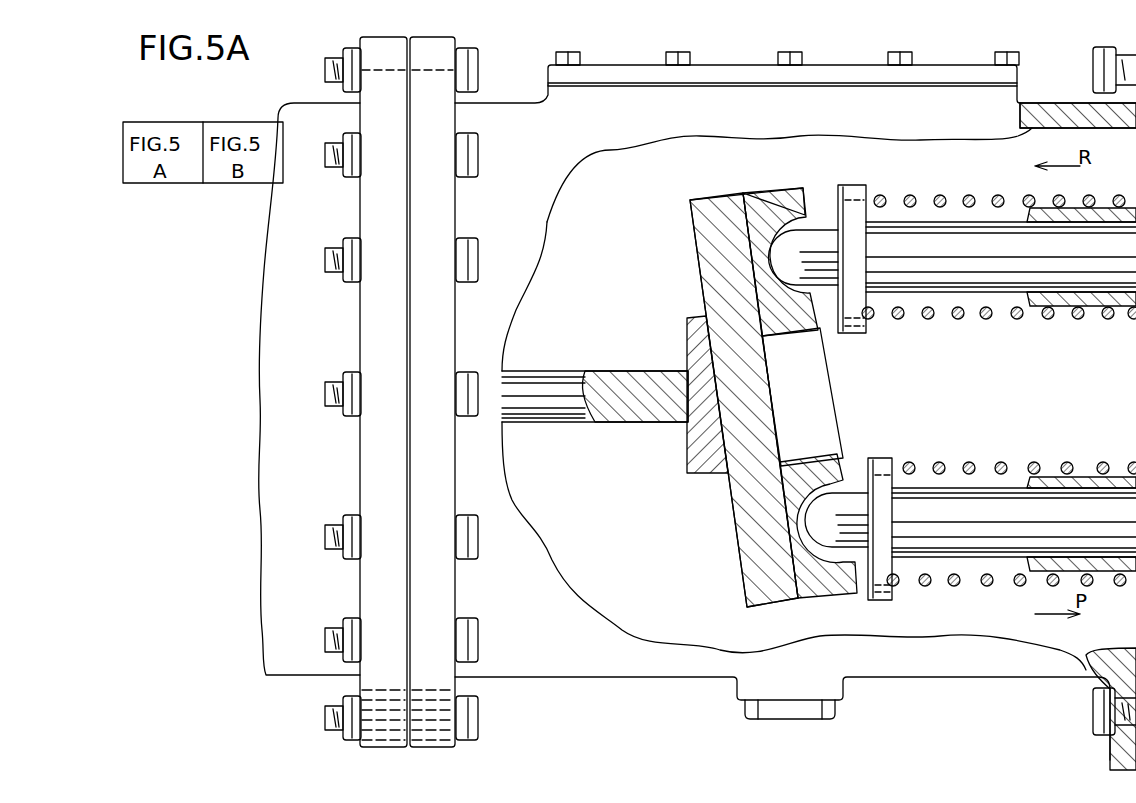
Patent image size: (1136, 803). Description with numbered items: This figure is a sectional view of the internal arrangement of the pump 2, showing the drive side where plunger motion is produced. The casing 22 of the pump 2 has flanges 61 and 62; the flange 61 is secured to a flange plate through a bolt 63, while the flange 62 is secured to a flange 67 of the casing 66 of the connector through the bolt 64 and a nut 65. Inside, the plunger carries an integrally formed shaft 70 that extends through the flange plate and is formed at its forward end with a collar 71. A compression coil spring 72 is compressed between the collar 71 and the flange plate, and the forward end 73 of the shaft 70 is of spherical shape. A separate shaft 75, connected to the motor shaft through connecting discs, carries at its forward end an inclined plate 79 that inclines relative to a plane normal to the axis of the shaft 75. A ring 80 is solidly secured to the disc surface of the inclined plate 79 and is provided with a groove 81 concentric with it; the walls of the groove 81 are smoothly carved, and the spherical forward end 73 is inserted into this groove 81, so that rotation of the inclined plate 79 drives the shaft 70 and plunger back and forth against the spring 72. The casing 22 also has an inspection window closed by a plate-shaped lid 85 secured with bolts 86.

The pump 2 is at (985, 42).
The casing 22 is at (950, 680).
The flange 61 is at (1115, 735).
The flange 62 is at (460, 750).
The bolt 63 is at (1093, 712).
The bolt 64 is at (478, 55).
The nut 65 is at (343, 54).
The casing 66 is at (290, 678).
The flange 67 is at (355, 752).
The shaft 70 is at (975, 292).
The collar 71 is at (855, 333).
The compression coil spring 72 is at (969, 195).
The forward end 73 is at (822, 243).
The shaft 75 is at (650, 422).
The inclined plate 79 is at (710, 297).
The ring 80 is at (843, 478).
The groove 81 is at (812, 450).
The plate-shaped lid 85 is at (840, 65).
The bolts 86 is at (690, 52).